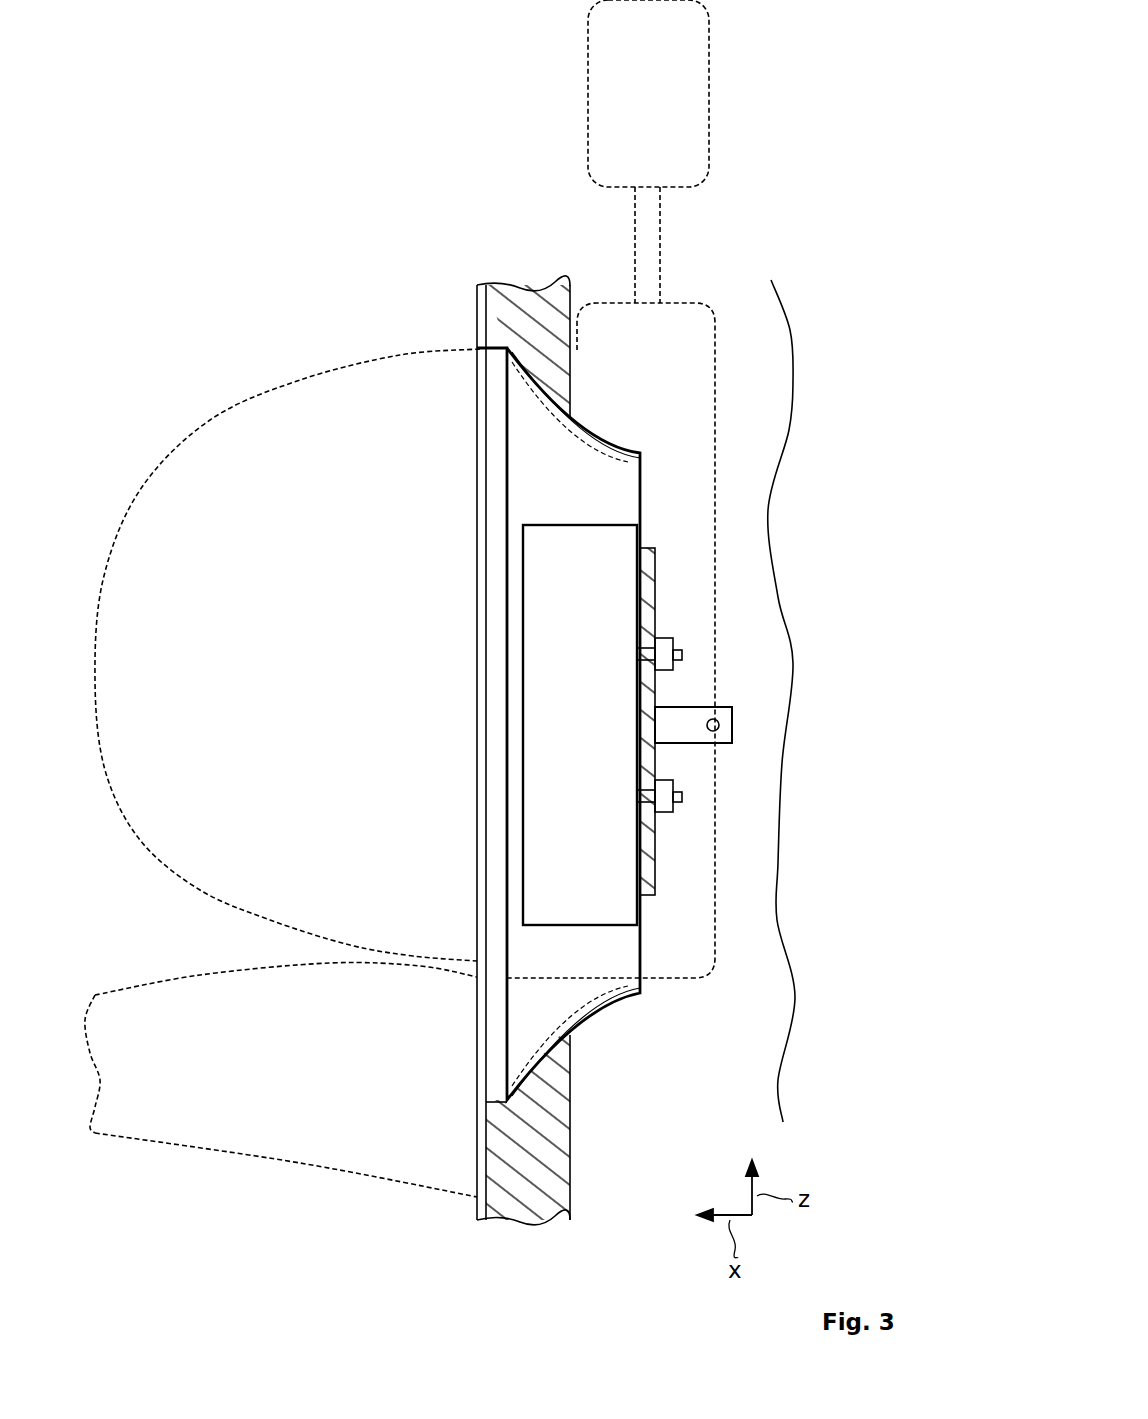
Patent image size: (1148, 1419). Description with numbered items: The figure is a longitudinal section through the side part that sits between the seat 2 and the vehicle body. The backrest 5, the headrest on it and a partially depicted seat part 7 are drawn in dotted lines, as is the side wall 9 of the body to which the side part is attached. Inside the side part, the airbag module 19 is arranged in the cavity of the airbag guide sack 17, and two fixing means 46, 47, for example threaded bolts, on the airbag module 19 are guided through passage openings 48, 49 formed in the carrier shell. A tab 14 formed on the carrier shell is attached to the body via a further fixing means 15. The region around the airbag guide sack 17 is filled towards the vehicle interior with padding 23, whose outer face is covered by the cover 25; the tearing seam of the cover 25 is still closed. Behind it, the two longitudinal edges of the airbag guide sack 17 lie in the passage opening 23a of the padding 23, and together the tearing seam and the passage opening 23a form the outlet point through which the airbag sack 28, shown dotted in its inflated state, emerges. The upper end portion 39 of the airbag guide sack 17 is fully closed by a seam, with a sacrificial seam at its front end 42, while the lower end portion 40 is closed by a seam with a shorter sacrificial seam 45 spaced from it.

The seat 2 is at (688, 303).
The backrest 5 is at (695, 75).
The seat part 7 is at (281, 1080).
The side wall 9 is at (765, 366).
The tab 14 is at (732, 712).
The fixing means 15 is at (719, 725).
The airbag guide sack 17 is at (436, 519).
The airbag module 19 is at (580, 725).
The padding 23 is at (517, 298).
The passage opening 23a is at (497, 1102).
The cover 25 is at (480, 340).
The airbag sack 28 is at (222, 410).
The upper end portion 39 is at (622, 452).
The lower end portion 40 is at (607, 1002).
The front end 42 is at (530, 416).
The sacrificial seam 45 is at (530, 1040).
The fixing means 46 is at (682, 653).
The fixing means 47 is at (682, 797).
The passage opening 48 is at (657, 623).
The passage opening 49 is at (650, 808).